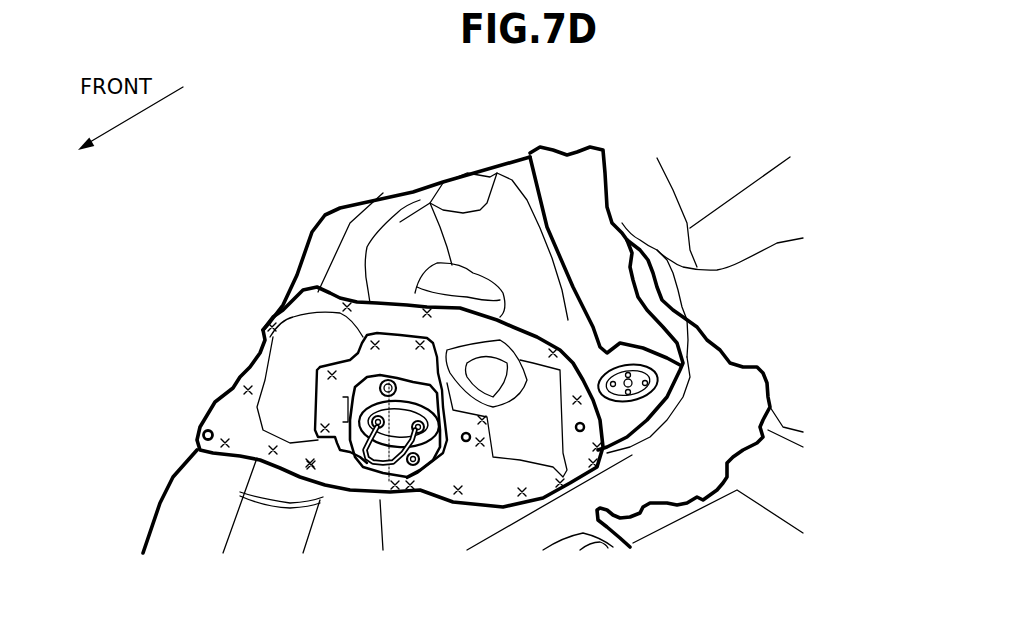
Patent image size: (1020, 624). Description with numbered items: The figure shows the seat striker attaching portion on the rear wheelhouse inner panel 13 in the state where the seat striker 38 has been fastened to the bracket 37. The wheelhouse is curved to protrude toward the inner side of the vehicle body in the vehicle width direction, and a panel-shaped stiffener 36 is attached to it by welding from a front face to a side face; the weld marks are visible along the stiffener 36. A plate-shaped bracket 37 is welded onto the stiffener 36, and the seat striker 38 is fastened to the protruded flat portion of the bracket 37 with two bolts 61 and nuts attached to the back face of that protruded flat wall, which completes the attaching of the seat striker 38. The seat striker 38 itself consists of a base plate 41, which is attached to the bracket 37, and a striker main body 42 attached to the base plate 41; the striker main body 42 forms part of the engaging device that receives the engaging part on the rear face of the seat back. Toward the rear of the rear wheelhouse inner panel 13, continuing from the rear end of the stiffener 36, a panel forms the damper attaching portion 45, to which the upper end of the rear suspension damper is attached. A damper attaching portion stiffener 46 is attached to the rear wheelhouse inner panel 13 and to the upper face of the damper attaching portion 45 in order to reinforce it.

The rear wheelhouse inner panel 13 is at (410, 182).
The stiffener 36 is at (218, 386).
The bracket 37 is at (436, 330).
The seat striker 38 is at (364, 388).
The base plate 41 is at (412, 397).
The striker main body 42 is at (377, 453).
The damper attaching portion 45 is at (627, 418).
The damper attaching portion stiffener 46 is at (572, 165).
The bolt 61 is at (388, 380).